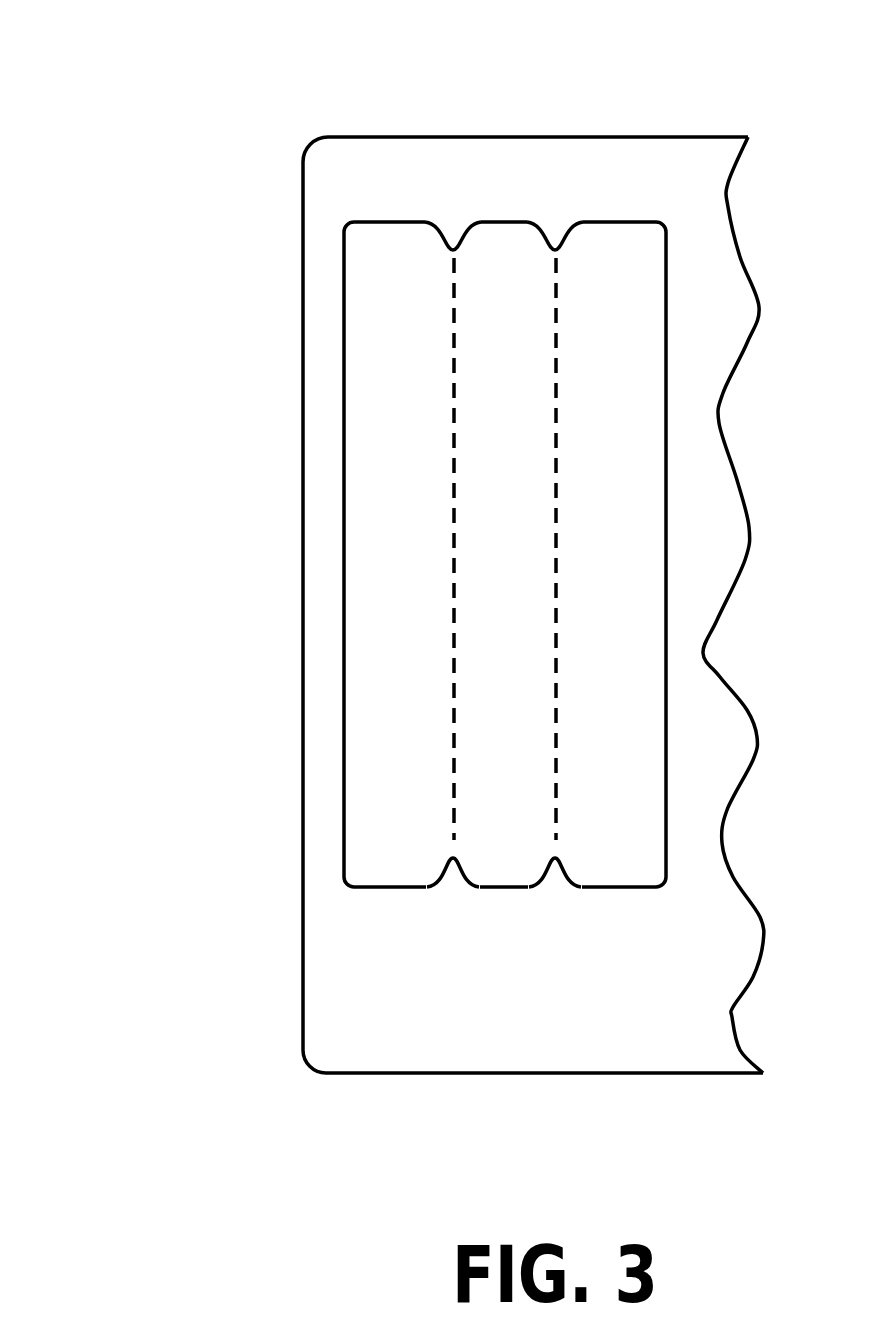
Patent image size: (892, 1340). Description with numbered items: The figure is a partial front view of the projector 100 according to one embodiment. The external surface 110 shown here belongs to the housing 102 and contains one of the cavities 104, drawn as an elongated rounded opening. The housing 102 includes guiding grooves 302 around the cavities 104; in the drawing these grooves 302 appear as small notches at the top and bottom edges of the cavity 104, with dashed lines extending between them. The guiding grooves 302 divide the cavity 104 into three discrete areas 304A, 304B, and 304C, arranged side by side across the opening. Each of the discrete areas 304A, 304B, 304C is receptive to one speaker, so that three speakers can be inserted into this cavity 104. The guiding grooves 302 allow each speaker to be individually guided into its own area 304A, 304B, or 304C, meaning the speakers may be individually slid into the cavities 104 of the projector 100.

The projector 100 is at (105, 731).
The housing 102 is at (567, 137).
The cavity 104 is at (535, 572).
The external surface 110 is at (388, 182).
The guiding grooves 302 is at (458, 257).
The discrete area 304A is at (358, 732).
The discrete area 304B is at (466, 732).
The discrete area 304C is at (571, 732).